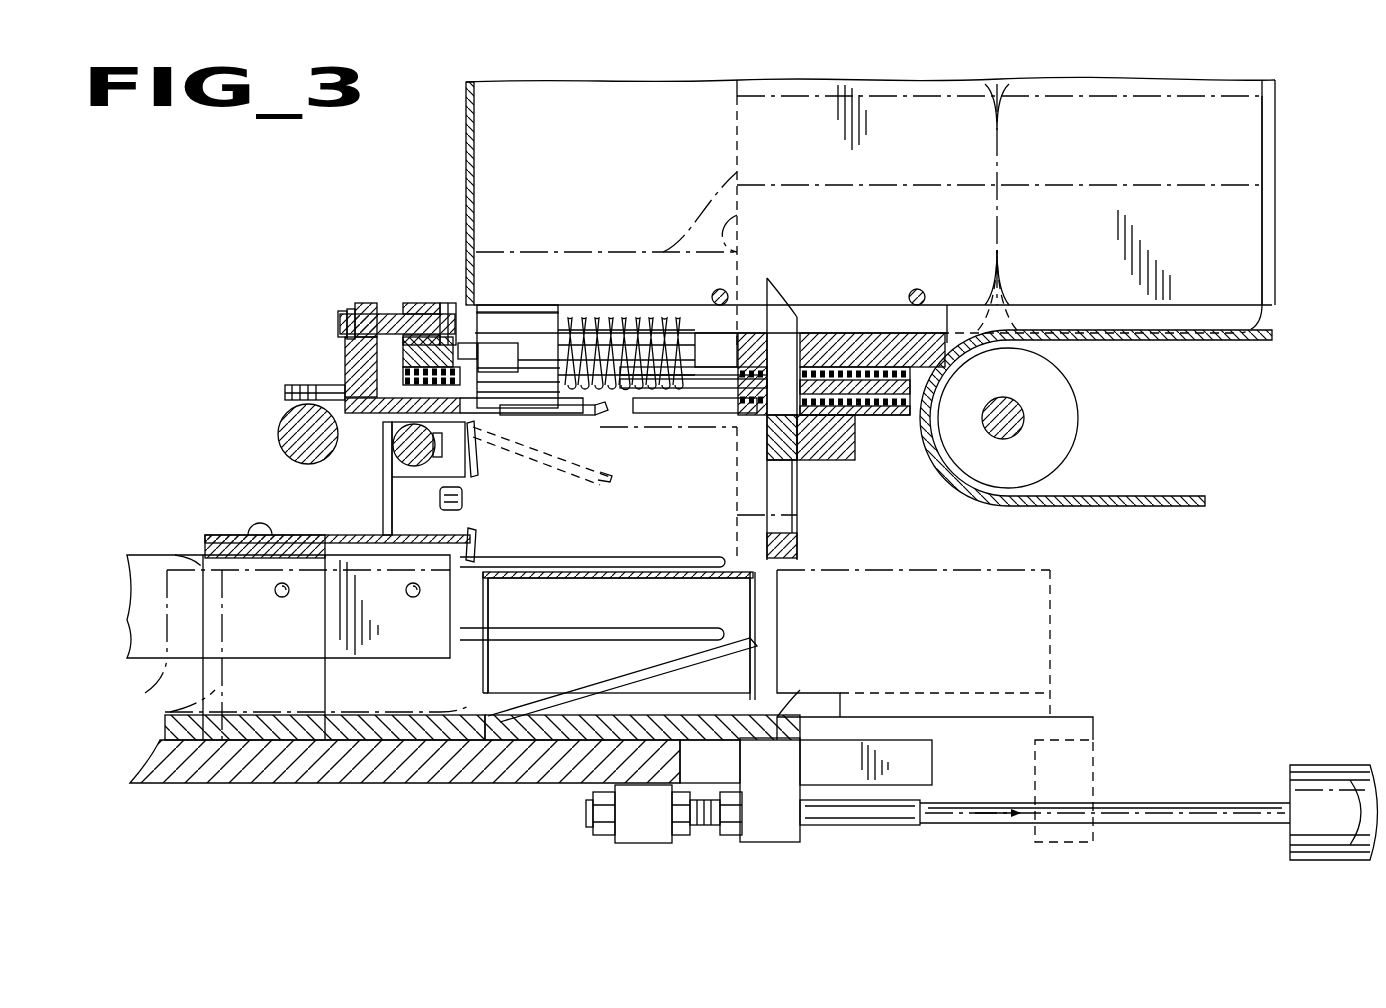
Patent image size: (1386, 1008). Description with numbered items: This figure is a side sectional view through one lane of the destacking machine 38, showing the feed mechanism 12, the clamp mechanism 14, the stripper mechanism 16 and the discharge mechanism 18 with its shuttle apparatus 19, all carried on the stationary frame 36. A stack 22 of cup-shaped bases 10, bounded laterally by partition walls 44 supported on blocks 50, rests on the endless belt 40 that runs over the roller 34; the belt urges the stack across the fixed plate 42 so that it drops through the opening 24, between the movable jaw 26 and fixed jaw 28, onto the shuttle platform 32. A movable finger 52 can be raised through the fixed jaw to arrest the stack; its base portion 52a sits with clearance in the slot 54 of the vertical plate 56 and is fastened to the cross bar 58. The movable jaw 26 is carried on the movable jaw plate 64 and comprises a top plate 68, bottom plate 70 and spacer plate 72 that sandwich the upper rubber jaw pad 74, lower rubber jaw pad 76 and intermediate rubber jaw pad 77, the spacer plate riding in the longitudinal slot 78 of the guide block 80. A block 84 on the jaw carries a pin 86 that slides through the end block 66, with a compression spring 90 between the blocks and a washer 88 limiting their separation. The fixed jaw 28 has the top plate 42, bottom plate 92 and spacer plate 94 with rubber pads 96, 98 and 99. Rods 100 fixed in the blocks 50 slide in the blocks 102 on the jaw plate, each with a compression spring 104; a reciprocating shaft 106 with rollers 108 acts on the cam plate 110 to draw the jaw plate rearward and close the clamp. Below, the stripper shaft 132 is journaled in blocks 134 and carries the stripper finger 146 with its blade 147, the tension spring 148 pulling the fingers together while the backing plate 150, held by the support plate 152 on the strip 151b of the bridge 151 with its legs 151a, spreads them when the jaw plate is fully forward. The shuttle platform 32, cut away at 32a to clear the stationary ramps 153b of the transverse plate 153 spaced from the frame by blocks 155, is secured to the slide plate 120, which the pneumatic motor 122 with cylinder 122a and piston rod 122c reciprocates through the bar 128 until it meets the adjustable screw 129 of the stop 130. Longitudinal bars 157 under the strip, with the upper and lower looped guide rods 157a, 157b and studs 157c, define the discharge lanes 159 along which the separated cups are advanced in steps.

The cup-shaped base 10 is at (1278, 225).
The feed mechanism 12 is at (1268, 332).
The clamp mechanism 14 is at (330, 327).
The stripper mechanism 16 is at (610, 425).
The discharge mechanism 18 is at (162, 724).
The shuttle apparatus 19 is at (1085, 662).
The stack 22 is at (734, 118).
The opening 24 is at (590, 110).
The movable jaw 26 is at (515, 350).
The fixed jaw 28 is at (718, 360).
The shuttle platform 32 is at (760, 598).
The cut-away 32a is at (490, 660).
The roller 34 is at (1080, 402).
The stationary frame 36 is at (410, 785).
The destacking machine 38 is at (345, 186).
The endless belt 40 is at (1275, 336).
The fixed plate 42 is at (810, 340).
The partition wall 44 is at (1276, 240).
The block 50 is at (877, 320).
The movable finger 52 is at (775, 292).
The base portion 52a is at (792, 473).
The slot 54 is at (795, 492).
The vertical plate 56 is at (797, 546).
The cross bar 58 is at (852, 428).
The movable jaw plate 64 is at (530, 448).
The end block 66 is at (358, 303).
The top plate 68 is at (400, 350).
The bottom plate 70 is at (478, 440).
The spacer plate 72 is at (370, 415).
The upper rubber jaw pad 74 is at (482, 355).
The lower rubber jaw pad 76 is at (540, 380).
The intermediate rubber jaw pad 77 is at (468, 350).
The longitudinal slot 78 is at (400, 377).
The guide block 80 is at (400, 365).
The block 84 is at (430, 303).
The pin 86 is at (348, 324).
The washer 88 is at (342, 312).
The compression spring 90 is at (393, 312).
The bottom plate 92 is at (910, 398).
The spacer plate 94 is at (910, 382).
The rubber pad 96 is at (665, 386).
The rubber pad 98 is at (665, 372).
The rubber pad 99 is at (728, 395).
The rod 100 is at (645, 318).
The block 102 is at (508, 306).
The compression spring 104 is at (575, 318).
The reciprocating shaft 106 is at (282, 426).
The roller 108 is at (290, 398).
The cam plate 110 is at (285, 390).
The slide plate 120 is at (855, 705).
The pneumatic motor 122 is at (1288, 851).
The cylinder 122a is at (1345, 765).
The piston rod 122c is at (1135, 803).
The bar 128 is at (768, 842).
The adjustable screw 129 is at (705, 826).
The stop 130 is at (584, 812).
The stripper shaft 132 is at (397, 448).
The block 134 is at (432, 480).
The stripper finger 146 is at (538, 417).
The blade 147 is at (583, 417).
The tension spring 148 is at (462, 492).
The backing plate 150 is at (392, 520).
The bridge 151 is at (200, 540).
The leg 151a is at (175, 555).
The strip 151b is at (225, 535).
The support plate 152 is at (300, 535).
The transverse plate 153 is at (456, 714).
The stationary ramp 153b is at (625, 672).
The block 155 is at (425, 705).
The longitudinal bar 157 is at (127, 612).
The upper looped guide rod 157a is at (575, 557).
The lower looped guide rod 157b is at (573, 628).
The stud 157c is at (277, 595).
The discharge lane 159 is at (120, 645).